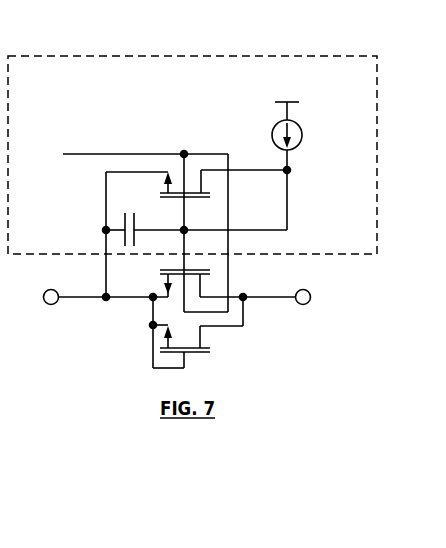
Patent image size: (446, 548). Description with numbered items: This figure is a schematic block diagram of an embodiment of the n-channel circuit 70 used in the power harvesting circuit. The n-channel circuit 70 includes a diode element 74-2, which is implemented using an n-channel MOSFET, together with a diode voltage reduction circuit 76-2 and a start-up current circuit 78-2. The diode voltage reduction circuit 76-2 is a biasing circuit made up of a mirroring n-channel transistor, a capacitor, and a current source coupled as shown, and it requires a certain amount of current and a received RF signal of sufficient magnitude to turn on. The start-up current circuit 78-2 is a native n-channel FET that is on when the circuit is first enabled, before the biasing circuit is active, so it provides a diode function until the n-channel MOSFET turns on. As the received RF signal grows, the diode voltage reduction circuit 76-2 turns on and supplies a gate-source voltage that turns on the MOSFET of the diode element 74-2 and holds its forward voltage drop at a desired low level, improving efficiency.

The n-channel circuit 70 is at (192, 252).
The diode voltage reduction circuit 76-2 is at (50, 87).
The diode element 74-2 is at (280, 284).
The start-up current circuit 78-2 is at (272, 351).